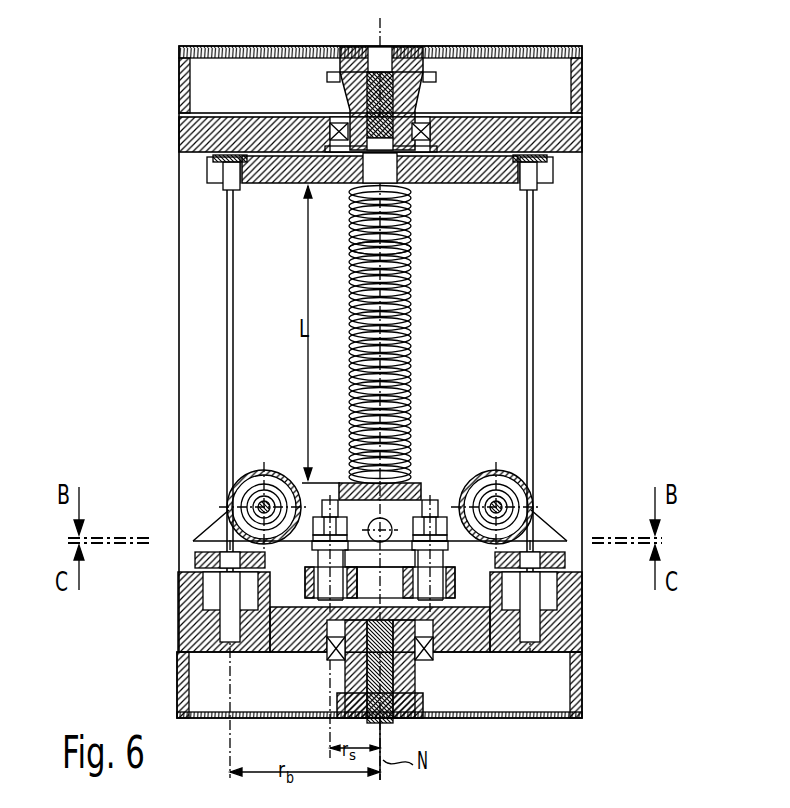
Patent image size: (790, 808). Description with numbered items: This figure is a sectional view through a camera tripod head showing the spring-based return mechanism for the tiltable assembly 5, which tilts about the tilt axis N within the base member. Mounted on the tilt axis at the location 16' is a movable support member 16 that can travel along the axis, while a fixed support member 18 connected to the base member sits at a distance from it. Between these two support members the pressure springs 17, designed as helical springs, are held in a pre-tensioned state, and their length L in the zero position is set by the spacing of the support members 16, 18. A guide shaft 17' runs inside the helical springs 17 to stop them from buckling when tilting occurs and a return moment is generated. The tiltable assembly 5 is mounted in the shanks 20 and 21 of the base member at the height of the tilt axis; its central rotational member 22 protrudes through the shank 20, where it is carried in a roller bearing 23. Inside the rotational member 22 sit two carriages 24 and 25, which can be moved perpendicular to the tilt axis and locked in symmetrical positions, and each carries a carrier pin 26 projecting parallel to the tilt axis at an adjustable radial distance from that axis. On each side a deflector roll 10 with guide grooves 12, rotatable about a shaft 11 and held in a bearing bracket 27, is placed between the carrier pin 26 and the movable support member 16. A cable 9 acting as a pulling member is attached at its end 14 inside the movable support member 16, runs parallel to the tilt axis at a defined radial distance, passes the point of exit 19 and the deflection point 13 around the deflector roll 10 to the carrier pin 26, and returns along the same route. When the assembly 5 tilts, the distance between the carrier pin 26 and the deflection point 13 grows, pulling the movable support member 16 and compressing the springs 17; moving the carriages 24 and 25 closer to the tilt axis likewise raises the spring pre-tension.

The tiltable assembly 5 is at (585, 63).
The cable 9 is at (229, 312).
The deflector roll 10 is at (282, 476).
The shaft 11 is at (240, 481).
The guide grooves 12 is at (253, 470).
The deflection point 13 is at (222, 531).
The cable end 14 is at (228, 183).
The movable support member 16 is at (380, 200).
The mounting point of support member 16' is at (399, 75).
The pressure springs 17 is at (408, 335).
The guide shaft 17' is at (411, 237).
The fixed support member 18 is at (415, 482).
The point of exit 19 is at (228, 505).
The shank 20 is at (582, 627).
The shank 21 is at (583, 132).
The central rotational member 22 is at (314, 622).
The roller bearing 23 is at (435, 661).
The carriage 24 is at (305, 580).
The carriage 25 is at (456, 578).
The carrier pin 26 is at (326, 514).
The bearing bracket 27 is at (214, 522).